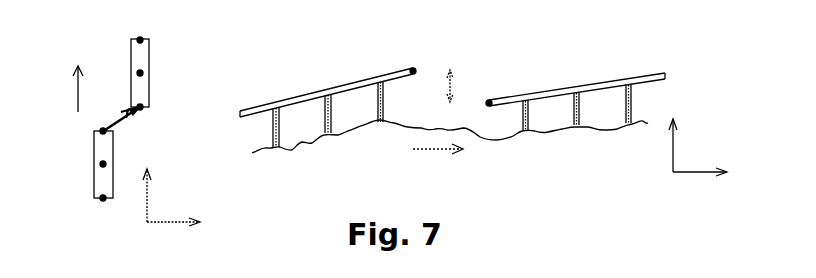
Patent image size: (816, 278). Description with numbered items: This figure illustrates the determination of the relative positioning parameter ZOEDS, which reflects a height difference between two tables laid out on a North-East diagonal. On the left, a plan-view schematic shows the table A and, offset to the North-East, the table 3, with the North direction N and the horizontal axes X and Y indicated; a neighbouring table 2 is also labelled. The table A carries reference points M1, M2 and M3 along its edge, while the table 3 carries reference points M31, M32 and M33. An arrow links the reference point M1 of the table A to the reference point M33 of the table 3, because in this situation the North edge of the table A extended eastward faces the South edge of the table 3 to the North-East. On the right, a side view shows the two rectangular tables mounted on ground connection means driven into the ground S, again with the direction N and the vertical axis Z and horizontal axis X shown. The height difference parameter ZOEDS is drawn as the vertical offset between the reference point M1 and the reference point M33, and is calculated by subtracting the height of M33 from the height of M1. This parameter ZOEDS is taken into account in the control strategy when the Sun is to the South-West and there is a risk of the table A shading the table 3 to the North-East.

The table 2 is at (113, 73).
The table 3 is at (148, 59).
The table A is at (100, 152).
The reference point M1 is at (103, 131).
The reference point M2 is at (103, 164).
The reference point M3 is at (103, 199).
The reference point M31 is at (141, 39).
The reference point M32 is at (143, 73).
The reference point M33 is at (142, 108).
The ground S is at (500, 142).
The North direction N is at (274, 103).
The X axis X is at (443, 198).
The Y axis Y is at (145, 184).
The Z axis Z is at (672, 135).
The height difference parameter ΔzOEDS ZOEDS is at (459, 90).